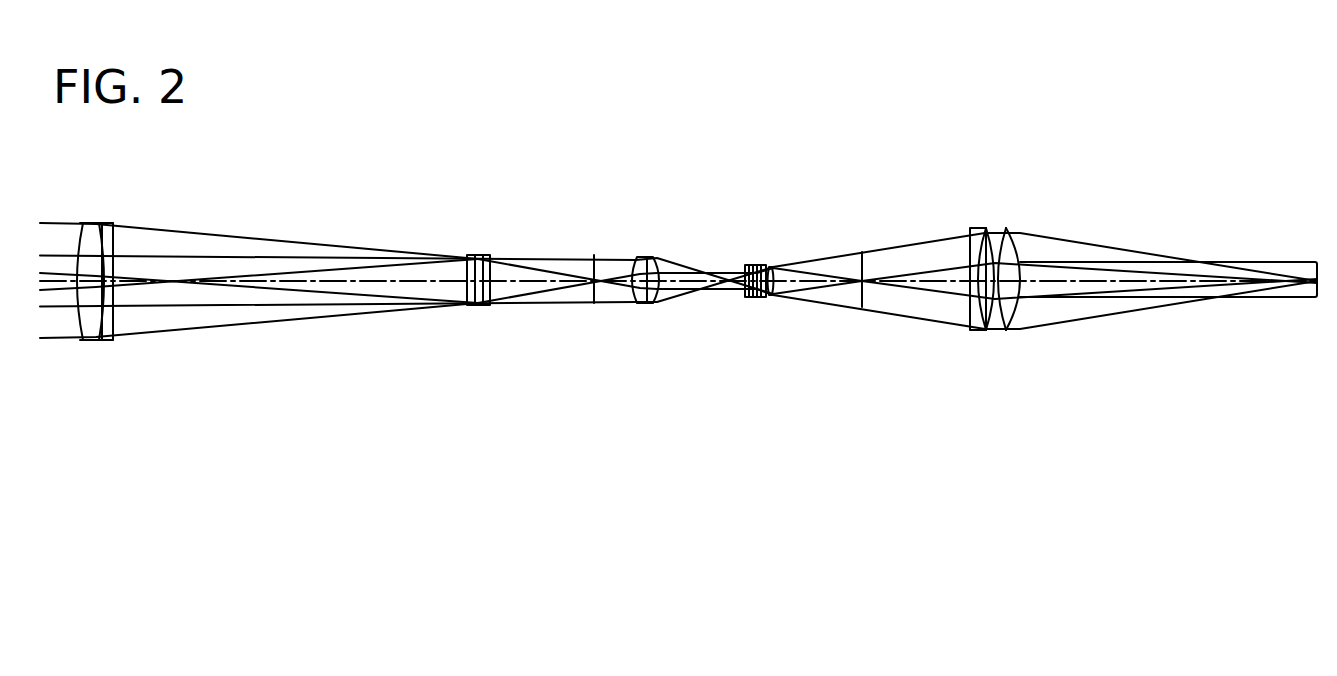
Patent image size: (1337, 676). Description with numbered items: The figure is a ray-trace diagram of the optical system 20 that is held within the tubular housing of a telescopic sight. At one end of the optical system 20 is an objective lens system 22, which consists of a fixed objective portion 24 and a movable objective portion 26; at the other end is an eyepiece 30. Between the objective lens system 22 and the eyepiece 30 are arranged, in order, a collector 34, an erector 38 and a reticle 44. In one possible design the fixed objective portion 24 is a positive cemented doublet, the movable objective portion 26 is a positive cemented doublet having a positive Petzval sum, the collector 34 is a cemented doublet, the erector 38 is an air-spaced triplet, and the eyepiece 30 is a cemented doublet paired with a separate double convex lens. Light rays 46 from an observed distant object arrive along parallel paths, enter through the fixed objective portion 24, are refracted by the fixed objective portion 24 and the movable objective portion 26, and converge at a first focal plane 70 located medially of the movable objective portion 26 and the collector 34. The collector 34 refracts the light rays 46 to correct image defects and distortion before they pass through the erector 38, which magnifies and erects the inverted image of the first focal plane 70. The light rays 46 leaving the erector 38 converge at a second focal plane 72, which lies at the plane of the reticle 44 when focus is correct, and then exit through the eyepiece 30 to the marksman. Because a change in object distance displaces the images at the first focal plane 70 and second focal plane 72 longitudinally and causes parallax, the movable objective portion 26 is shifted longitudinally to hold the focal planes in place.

The optical system 20 is at (838, 90).
The objective lens system 22 is at (78, 379).
The fixed objective portion 24 is at (107, 265).
The movable objective portion 26 is at (492, 308).
The eyepiece 30 is at (1030, 228).
The collector 34 is at (667, 255).
The erector 38 is at (775, 262).
The reticle 44 is at (860, 282).
The light rays 46 is at (130, 277).
The first focal plane 70 is at (594, 255).
The second focal plane 72 is at (862, 307).